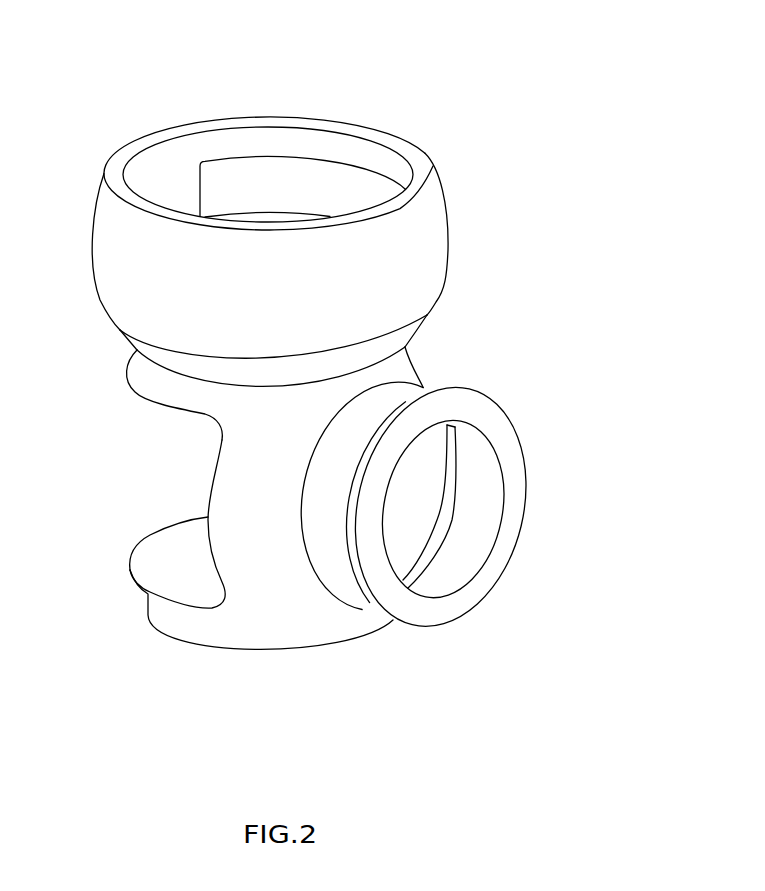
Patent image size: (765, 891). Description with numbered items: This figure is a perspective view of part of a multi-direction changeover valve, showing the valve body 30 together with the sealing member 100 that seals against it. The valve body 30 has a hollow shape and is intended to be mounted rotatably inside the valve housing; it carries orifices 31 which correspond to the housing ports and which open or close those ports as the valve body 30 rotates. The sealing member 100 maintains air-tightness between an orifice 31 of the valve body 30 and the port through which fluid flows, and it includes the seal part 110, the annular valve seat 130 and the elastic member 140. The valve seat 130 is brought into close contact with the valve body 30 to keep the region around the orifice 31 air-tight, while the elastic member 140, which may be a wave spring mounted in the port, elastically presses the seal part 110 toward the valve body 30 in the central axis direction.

The valve body 30 is at (450, 150).
The orifice 31 is at (310, 157).
The sealing member 100 is at (397, 498).
The seal part 110 is at (377, 442).
The valve seat 130 is at (402, 395).
The elastic member 140 is at (512, 473).